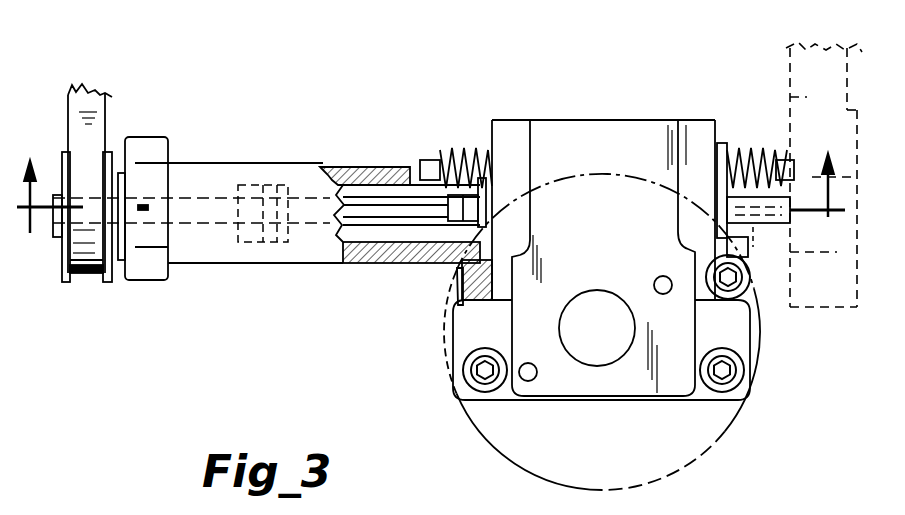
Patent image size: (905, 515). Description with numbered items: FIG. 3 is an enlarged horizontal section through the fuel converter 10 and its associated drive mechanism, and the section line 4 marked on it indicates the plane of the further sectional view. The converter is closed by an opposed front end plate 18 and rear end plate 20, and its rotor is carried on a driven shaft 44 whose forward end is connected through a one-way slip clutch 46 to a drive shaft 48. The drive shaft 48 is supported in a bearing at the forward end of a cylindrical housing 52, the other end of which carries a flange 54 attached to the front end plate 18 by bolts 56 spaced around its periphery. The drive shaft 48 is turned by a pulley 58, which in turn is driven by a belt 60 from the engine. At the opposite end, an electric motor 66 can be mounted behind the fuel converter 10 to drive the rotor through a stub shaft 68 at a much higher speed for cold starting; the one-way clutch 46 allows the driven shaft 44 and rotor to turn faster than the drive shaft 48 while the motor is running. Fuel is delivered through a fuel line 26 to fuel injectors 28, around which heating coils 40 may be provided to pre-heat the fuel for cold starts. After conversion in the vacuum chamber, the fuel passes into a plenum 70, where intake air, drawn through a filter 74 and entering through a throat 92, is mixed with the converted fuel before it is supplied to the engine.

The section line 4- 4 is at (429, 176).
The fuel converter 10 is at (555, 100).
The front end plate 18 is at (500, 133).
The rear end plate 20 is at (688, 130).
The fuel line 26 is at (427, 170).
The fuel injectors 28 is at (462, 165).
The heating coils 40 is at (500, 157).
The driven shaft 44 is at (427, 213).
The one-way slip clutch 46 is at (270, 185).
The drive shaft 48 is at (198, 227).
The cylindrical housing 52 is at (308, 247).
The flange 54 is at (493, 288).
The bolts 56 is at (460, 307).
The pulley 58 is at (60, 257).
The belt 60 is at (88, 263).
The electric motor 66 is at (850, 312).
The stub shaft 68 is at (767, 220).
The plenum 70 is at (587, 390).
The filter 74 is at (490, 447).
The throat 92 is at (618, 356).